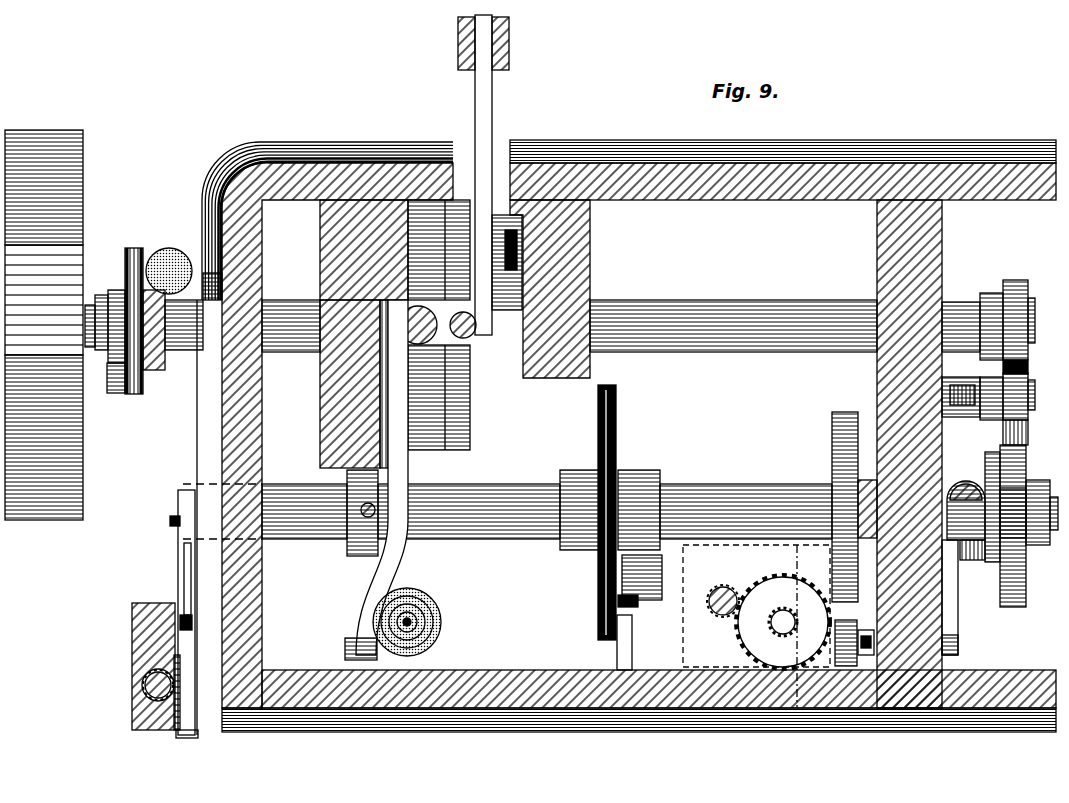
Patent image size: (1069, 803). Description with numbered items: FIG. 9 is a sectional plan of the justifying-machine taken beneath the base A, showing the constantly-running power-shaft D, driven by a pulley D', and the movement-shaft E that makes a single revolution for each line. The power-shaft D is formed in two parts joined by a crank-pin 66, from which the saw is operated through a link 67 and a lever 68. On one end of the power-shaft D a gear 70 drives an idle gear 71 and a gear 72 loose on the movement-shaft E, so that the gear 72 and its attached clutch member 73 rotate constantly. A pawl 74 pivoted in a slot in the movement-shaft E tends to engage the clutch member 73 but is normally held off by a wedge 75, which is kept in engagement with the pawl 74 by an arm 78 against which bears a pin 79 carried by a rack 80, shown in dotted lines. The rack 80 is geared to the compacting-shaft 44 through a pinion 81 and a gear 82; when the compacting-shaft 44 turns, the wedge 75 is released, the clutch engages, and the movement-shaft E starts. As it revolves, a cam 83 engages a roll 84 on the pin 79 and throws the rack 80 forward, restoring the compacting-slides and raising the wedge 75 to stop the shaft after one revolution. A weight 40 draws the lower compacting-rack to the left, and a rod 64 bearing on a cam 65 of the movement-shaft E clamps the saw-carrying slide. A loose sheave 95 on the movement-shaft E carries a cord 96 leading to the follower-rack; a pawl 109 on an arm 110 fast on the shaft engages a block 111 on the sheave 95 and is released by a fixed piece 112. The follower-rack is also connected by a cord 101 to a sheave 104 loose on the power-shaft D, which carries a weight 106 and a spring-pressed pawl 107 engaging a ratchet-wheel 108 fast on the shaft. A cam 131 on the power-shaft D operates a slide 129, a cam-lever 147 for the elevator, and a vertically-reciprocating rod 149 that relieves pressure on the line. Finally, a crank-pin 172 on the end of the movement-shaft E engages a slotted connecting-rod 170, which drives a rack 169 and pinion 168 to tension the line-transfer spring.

The weight 40 is at (442, 618).
The compacting-shaft 44 is at (722, 587).
The rod 64 is at (362, 505).
The cam 65 is at (352, 544).
The crank-pin 66 is at (517, 226).
The link 67 is at (475, 104).
The lever 68 is at (509, 62).
The gear 70 is at (1010, 282).
The idle gear 71 is at (998, 422).
The gear 72 is at (1010, 608).
The clutch member 73 is at (976, 553).
The pawl 74 is at (968, 483).
The wedge 75 is at (950, 613).
The arm 78 is at (865, 664).
The pin 79 is at (868, 629).
The rack 80 is at (797, 571).
The pinion 81 is at (771, 623).
The gear 82 is at (745, 646).
The cam 83 is at (832, 423).
The roll 84 is at (833, 625).
The sheave 95 is at (598, 438).
The cord 96 is at (610, 385).
The cord 101 is at (140, 250).
The sheave 104 is at (150, 372).
The weight 106 is at (176, 258).
The spring-pressed pawl 107 is at (116, 393).
The ratchet-wheel 108 is at (112, 290).
The pawl 109 is at (635, 606).
The arm 110 is at (650, 586).
The block 111 is at (598, 571).
The fixed piece 112 is at (640, 651).
The slide 129 is at (428, 308).
The cam 131 is at (445, 452).
The cam-lever 147 is at (380, 586).
The vertically-reciprocating rod 149 is at (474, 338).
The pinion 168 is at (148, 689).
The rack 169 is at (193, 738).
The connecting-rod 170 is at (180, 581).
The crank-pin 172 is at (170, 529).
The base A is at (778, 200).
The power-shaft D is at (532, 326).
The pulley D' is at (61, 325).
The movement-shaft E is at (782, 484).